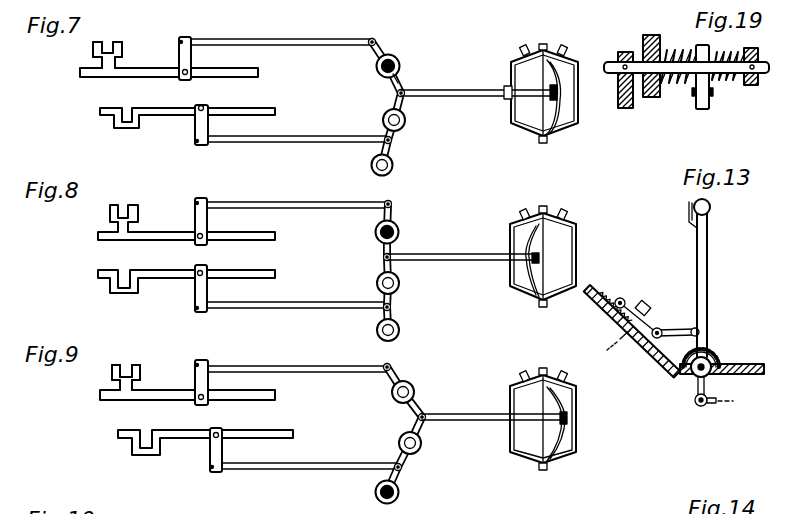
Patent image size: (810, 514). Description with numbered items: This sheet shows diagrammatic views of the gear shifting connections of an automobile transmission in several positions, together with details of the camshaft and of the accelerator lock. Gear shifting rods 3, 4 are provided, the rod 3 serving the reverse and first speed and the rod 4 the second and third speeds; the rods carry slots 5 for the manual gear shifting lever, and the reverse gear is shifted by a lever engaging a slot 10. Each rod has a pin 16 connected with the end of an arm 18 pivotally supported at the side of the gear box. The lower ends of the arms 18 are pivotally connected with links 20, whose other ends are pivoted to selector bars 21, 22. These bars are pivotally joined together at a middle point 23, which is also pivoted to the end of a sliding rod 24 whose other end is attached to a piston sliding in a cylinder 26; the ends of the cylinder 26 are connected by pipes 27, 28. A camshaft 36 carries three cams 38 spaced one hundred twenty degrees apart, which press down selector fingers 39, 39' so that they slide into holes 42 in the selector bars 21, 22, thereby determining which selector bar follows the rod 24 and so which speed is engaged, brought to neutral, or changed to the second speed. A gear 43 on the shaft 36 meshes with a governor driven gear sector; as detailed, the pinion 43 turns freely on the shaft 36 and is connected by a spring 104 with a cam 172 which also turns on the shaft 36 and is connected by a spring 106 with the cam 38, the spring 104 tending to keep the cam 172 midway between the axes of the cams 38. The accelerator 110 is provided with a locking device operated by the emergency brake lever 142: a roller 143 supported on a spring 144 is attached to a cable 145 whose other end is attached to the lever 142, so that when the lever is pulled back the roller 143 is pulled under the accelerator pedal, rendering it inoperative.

In FIG. 7, the gear shifting rod 3 is at (146, 68).
In FIG. 8, the gear shifting rod 3 is at (160, 231).
In FIG. 9, the gear shifting rod 3 is at (165, 390).
In FIG. 7, the gear shifting rod 4 is at (268, 107).
In FIG. 8, the gear shifting rod 4 is at (165, 270).
In FIG. 9, the gear shifting rod 4 is at (173, 432).
In FIG. 7, the slots 5 is at (105, 77).
In FIG. 8, the slots 5 is at (125, 240).
In FIG. 9, the slots 5 is at (122, 398).
In FIG. 7, the slot 10 is at (106, 45).
In FIG. 9, the slot 10 is at (123, 368).
In FIG. 7, the pins 16 is at (192, 78).
In FIG. 8, the pins 16 is at (201, 221).
In FIG. 9, the pins 16 is at (201, 382).
In FIG. 7, the arms 18 is at (195, 128).
In FIG. 8, the arms 18 is at (201, 288).
In FIG. 9, the arms 18 is at (216, 450).
In FIG. 7, the links 20 is at (273, 40).
In FIG. 8, the links 20 is at (279, 177).
In FIG. 9, the links 20 is at (302, 348).
In FIG. 7, the selector bar 21 is at (403, 87).
In FIG. 8, the selector bar 21 is at (383, 246).
In FIG. 9, the selector bar 21 is at (410, 407).
In FIG. 7, the selector bar 22 is at (393, 137).
In FIG. 8, the selector bar 22 is at (393, 302).
In FIG. 9, the selector bar 22 is at (421, 431).
In FIG. 7, the middle point 23 is at (395, 93).
In FIG. 7, the sliding rod 24 is at (450, 90).
In FIG. 8, the sliding rod 24 is at (443, 253).
In FIG. 9, the sliding rod 24 is at (458, 415).
In FIG. 7, the cylinder 26 is at (572, 120).
In FIG. 8, the cylinder 26 is at (527, 297).
In FIG. 9, the cylinder 26 is at (543, 419).
In FIG. 7, the pipe 27 is at (526, 52).
In FIG. 8, the pipe 27 is at (527, 218).
In FIG. 9, the pipe 27 is at (527, 378).
In FIG. 7, the pipe 28 is at (567, 52).
In FIG. 8, the pipe 28 is at (562, 217).
In FIG. 9, the pipe 28 is at (562, 378).
In FIG. 19, the camshaft 36 is at (763, 62).
In FIG. 19, the cams 38 is at (627, 108).
In FIG. 7, the selector finger 39 is at (398, 54).
In FIG. 8, the selector finger 39 is at (401, 223).
In FIG. 9, the selector finger 39' is at (406, 492).
In FIG. 7, the holes 42 is at (393, 163).
In FIG. 8, the holes 42 is at (400, 280).
In FIG. 19, the gear 43 is at (650, 35).
In FIG. 19, the spring 104 is at (673, 53).
In FIG. 19, the spring 106 is at (725, 53).
In FIG. 13, the accelerator 110 is at (645, 303).
In FIG. 13, the emergency brake lever 142 is at (708, 274).
In FIG. 13, the roller 143 is at (620, 298).
In FIG. 13, the spring 144 is at (602, 287).
In FIG. 13, the cable 145 is at (670, 332).
In FIG. 19, the cam 172 is at (693, 102).